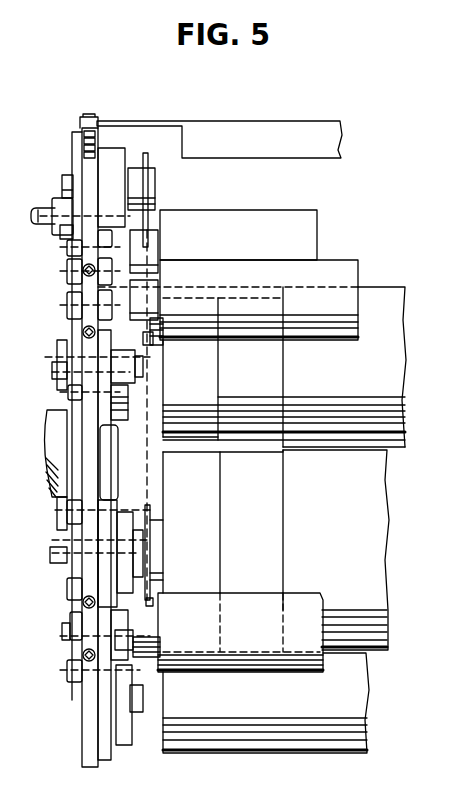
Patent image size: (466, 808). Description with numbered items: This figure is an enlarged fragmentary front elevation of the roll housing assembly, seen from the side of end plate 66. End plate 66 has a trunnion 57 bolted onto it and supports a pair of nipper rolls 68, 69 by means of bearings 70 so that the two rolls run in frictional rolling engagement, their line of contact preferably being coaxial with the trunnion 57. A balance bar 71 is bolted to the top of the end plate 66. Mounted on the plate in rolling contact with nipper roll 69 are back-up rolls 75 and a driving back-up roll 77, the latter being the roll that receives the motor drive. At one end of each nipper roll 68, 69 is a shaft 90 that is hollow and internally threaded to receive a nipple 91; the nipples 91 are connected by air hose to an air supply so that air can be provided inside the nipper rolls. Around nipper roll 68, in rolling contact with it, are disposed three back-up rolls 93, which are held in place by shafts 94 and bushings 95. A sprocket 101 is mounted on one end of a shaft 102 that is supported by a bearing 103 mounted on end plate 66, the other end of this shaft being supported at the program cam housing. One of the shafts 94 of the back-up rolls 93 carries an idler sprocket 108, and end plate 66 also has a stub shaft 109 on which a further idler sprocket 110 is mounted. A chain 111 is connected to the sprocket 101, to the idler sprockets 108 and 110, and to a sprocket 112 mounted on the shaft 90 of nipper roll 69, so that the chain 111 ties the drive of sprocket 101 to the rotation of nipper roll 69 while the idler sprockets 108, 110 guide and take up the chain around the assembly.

The trunnion 57 is at (54, 442).
The end plate 66 is at (82, 742).
The nipper roll 68 is at (380, 290).
The nipper roll 69 is at (372, 546).
The bearing 70 is at (117, 410).
The balance bar 71 is at (235, 128).
The back-up roll 75 is at (313, 608).
The driving back-up roll 77 is at (333, 756).
The shaft 90 is at (107, 357).
The nipple 91 is at (54, 369).
The back-up roll 93 is at (330, 266).
The shaft 94 is at (66, 282).
The bushing 95 is at (153, 288).
The sprocket 101 is at (157, 226).
The shaft 102 is at (40, 210).
The bearing 103 is at (63, 228).
The idler sprocket 108 is at (150, 336).
The stub shaft 109 is at (62, 188).
The idler sprocket 110 is at (154, 151).
The chain 111 is at (147, 447).
The sprocket 112 is at (152, 596).